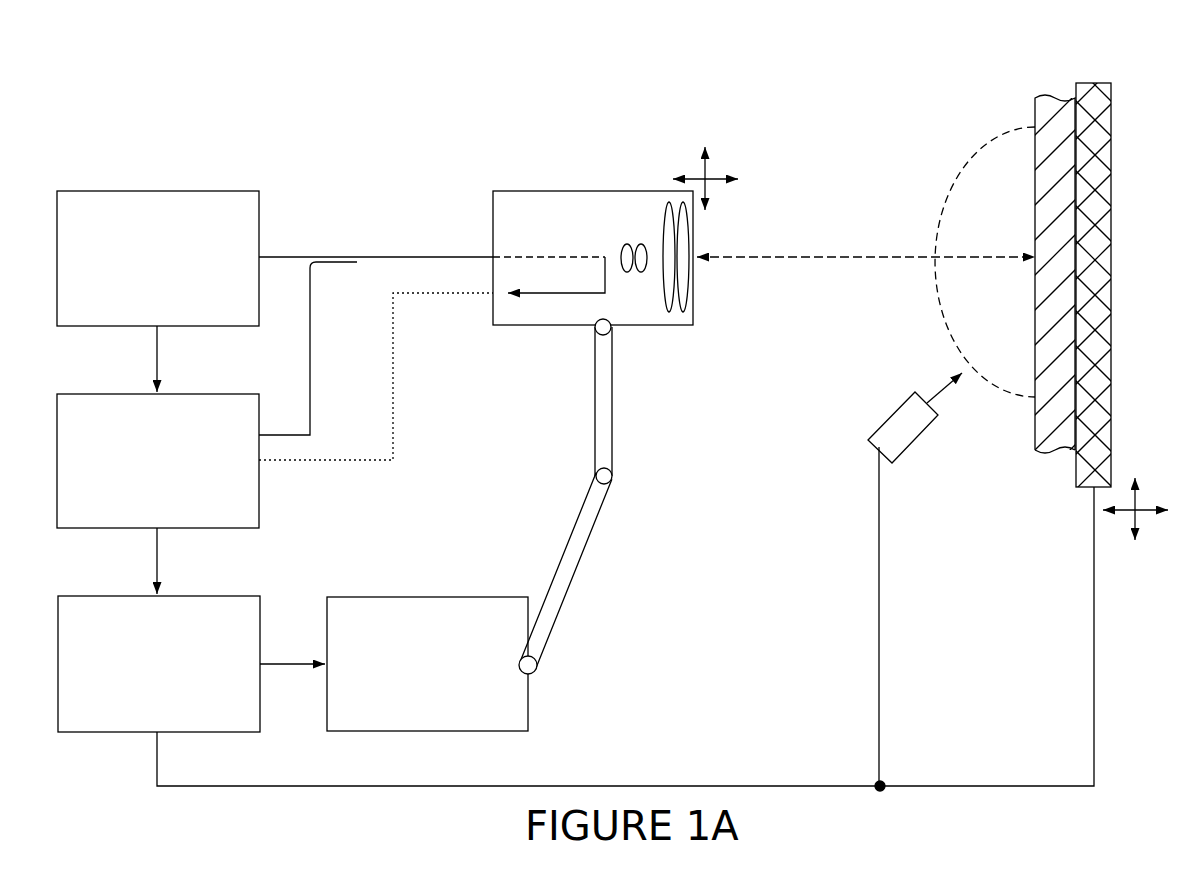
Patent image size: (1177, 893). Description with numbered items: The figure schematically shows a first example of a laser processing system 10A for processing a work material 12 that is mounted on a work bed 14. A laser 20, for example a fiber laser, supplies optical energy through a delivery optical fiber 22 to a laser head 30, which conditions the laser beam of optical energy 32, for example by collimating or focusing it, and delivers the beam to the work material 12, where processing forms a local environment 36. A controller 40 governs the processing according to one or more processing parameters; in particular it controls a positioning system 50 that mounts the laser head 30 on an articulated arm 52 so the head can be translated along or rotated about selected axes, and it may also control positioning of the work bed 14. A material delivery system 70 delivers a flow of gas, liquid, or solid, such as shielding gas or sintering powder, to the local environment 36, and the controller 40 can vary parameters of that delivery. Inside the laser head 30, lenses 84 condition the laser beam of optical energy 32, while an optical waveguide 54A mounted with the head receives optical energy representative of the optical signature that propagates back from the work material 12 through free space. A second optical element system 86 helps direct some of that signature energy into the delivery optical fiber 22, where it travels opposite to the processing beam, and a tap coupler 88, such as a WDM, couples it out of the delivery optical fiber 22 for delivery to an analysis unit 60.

The laser processing system 10A is at (584, 106).
The work material 12 is at (1060, 93).
The work bed 14 is at (1093, 68).
The laser 20 is at (158, 258).
The delivery optical fiber 22 is at (398, 255).
The laser head 30 is at (593, 258).
The laser beam of optical energy 32 is at (963, 257).
The local environment 36 is at (1000, 348).
The controller 40 is at (159, 664).
The positioning system 50 is at (427, 664).
The articulated arm 52 is at (607, 447).
The optical waveguide 54A is at (412, 426).
The analysis unit 60 is at (158, 461).
The material delivery system 70 is at (898, 425).
The lenses 84 is at (683, 238).
The second optical element system 86 is at (627, 245).
The tap coupler 88 is at (333, 268).